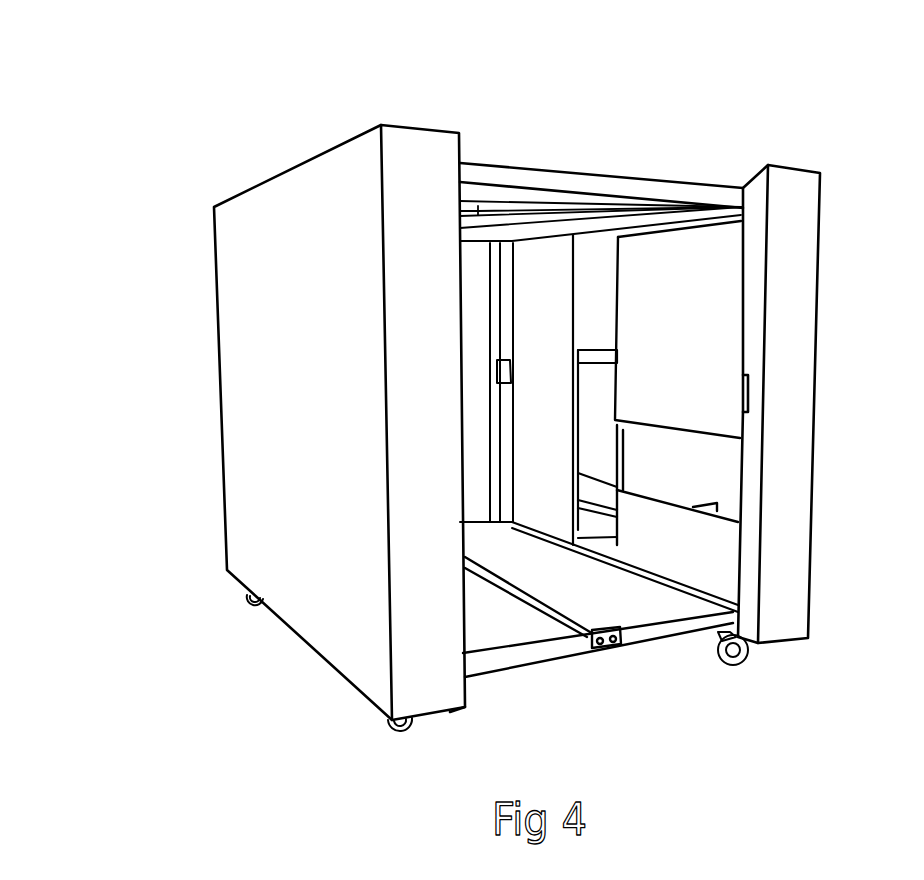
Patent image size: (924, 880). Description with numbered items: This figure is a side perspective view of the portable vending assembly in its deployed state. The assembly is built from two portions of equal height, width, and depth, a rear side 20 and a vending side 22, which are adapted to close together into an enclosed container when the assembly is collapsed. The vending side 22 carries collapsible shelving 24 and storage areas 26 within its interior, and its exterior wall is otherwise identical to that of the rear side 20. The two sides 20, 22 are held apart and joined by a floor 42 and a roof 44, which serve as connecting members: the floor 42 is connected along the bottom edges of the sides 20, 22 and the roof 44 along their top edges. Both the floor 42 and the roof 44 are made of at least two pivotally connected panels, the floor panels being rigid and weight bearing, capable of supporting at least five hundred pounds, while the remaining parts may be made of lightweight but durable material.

The rear side 20 is at (277, 433).
The vending side 22 is at (797, 355).
The collapsible shelving 24 is at (678, 383).
The storage areas 26 is at (593, 513).
The floor 42 is at (668, 628).
The roof 44 is at (644, 190).